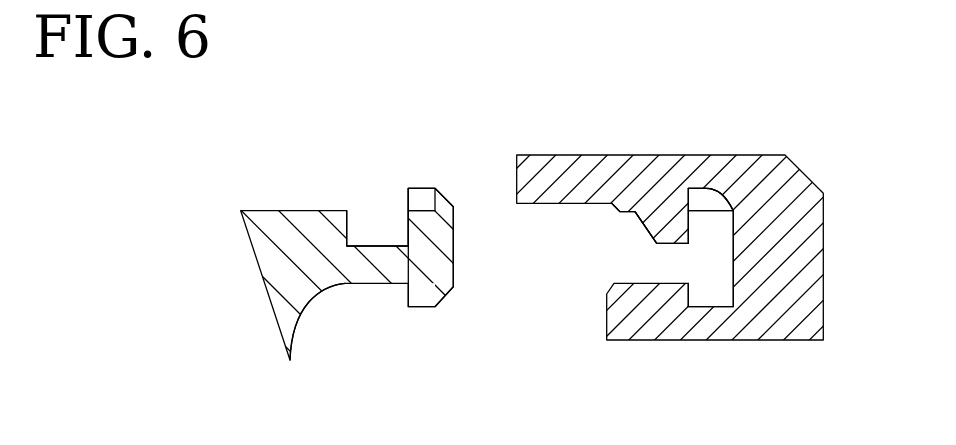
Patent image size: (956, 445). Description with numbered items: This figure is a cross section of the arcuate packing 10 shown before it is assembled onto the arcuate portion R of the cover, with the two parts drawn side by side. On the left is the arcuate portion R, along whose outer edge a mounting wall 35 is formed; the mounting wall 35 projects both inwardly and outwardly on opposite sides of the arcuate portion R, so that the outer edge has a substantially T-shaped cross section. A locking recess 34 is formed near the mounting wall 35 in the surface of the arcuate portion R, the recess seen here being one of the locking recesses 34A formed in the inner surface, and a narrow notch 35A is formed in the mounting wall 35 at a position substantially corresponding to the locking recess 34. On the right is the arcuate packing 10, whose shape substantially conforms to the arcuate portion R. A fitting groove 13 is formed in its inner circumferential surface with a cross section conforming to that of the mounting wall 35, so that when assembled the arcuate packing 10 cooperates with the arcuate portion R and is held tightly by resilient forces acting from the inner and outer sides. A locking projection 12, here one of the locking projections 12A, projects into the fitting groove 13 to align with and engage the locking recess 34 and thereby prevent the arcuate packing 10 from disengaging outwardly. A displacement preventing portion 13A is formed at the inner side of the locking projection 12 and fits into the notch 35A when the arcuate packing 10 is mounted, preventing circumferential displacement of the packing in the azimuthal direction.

The arcuate packing 10 is at (645, 247).
The locking projection 12 is at (647, 224).
The locking projection 12A is at (647, 224).
The fitting groove 13 is at (696, 307).
The displacement preventing portion 13A is at (700, 205).
The locking recess 34 is at (356, 245).
The locking recess 34A is at (368, 246).
The mounting wall 35 is at (423, 292).
The notch 35A is at (422, 211).
The arcuate portion R is at (331, 277).